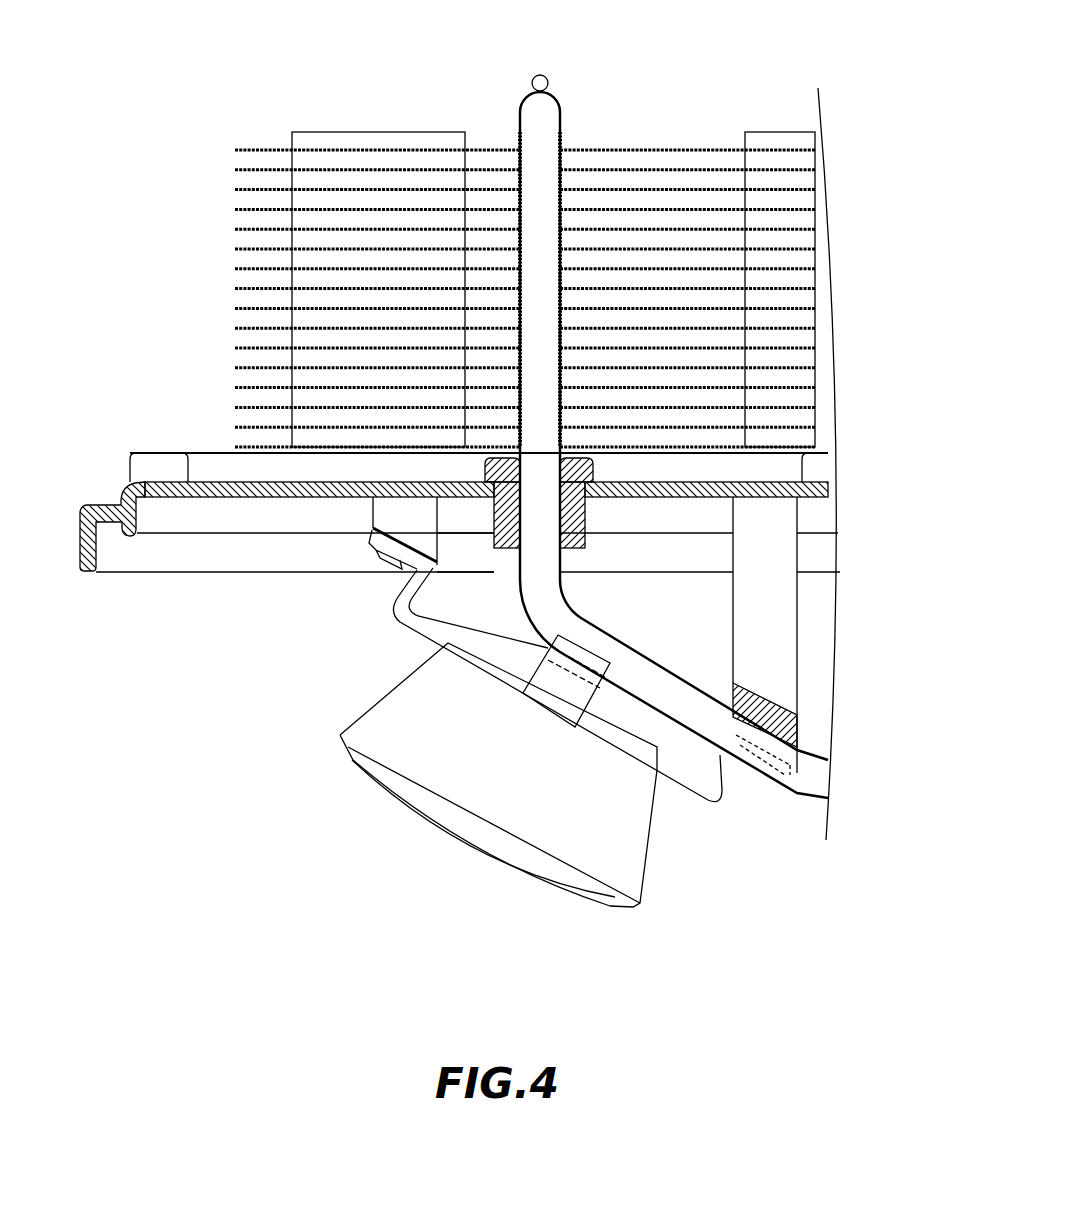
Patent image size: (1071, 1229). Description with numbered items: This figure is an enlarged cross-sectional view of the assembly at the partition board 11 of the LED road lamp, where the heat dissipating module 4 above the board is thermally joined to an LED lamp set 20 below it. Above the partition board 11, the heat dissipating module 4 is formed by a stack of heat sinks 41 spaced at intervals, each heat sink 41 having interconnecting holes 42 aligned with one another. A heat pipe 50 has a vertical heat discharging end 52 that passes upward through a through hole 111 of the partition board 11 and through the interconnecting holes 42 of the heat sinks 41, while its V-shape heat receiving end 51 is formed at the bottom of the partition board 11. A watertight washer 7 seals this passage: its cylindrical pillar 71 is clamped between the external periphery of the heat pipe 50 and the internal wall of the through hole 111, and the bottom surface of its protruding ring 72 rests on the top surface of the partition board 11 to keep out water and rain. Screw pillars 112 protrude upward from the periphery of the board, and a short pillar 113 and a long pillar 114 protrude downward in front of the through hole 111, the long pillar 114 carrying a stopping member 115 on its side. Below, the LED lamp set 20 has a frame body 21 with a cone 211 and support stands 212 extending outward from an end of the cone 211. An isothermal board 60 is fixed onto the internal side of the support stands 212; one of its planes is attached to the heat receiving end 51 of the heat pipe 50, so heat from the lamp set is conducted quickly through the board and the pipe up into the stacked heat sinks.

The heat dissipating module 4 is at (525, 237).
The heat sink 41 is at (632, 147).
The interconnecting hole 42 is at (560, 158).
The heat pipe 50 is at (633, 408).
The heat receiving end 51 is at (670, 707).
The heat discharging end 52 is at (538, 183).
The watertight washer 7 is at (600, 534).
The cylindrical pillar 71 is at (585, 510).
The protruding ring 72 is at (593, 472).
The partition board 11 is at (484, 464).
The through hole 111 is at (510, 550).
The screw pillar 112 is at (158, 465).
The short pillar 113 is at (392, 512).
The long pillar 114 is at (770, 625).
The stopping member 115 is at (790, 730).
The isothermal board 60 is at (713, 760).
The LED lamp set 20 is at (447, 801).
The frame body 21 is at (648, 875).
The cone 211 is at (590, 847).
The support stand 212 is at (563, 687).